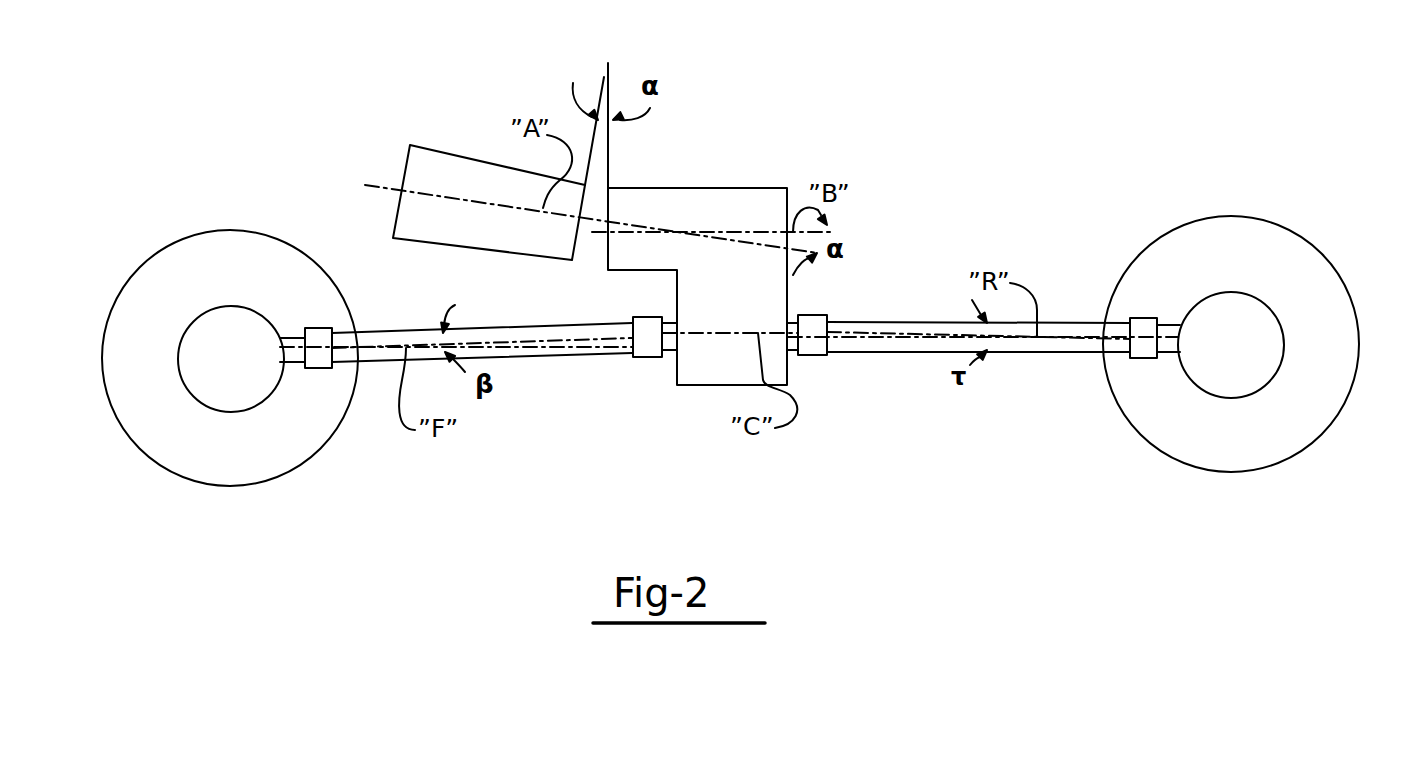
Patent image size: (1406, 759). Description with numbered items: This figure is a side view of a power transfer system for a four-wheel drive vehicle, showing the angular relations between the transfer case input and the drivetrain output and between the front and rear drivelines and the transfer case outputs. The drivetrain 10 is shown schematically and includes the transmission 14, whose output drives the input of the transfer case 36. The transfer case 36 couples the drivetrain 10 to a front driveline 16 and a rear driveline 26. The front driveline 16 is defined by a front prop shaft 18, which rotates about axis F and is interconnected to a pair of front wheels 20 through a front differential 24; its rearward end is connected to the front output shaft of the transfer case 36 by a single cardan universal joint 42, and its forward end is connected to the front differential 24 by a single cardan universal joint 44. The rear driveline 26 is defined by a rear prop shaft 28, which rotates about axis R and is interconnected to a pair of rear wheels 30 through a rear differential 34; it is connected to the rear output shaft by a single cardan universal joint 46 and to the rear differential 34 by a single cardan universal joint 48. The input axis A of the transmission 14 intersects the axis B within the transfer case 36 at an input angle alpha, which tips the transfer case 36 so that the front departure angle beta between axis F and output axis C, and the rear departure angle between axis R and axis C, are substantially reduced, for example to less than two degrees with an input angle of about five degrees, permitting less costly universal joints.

The drivetrain 10 is at (920, 114).
The transmission 14 is at (430, 167).
The front driveline 16 is at (525, 428).
The front prop shaft 18 is at (562, 353).
The front wheels 20 is at (202, 452).
The front differential 24 is at (232, 347).
The rear driveline 26 is at (1012, 210).
The rear prop shaft 28 is at (1022, 352).
The rear wheels 30 is at (1287, 263).
The rear differential 34 is at (1250, 327).
The transfer case 36 is at (742, 205).
The single cardan universal joint 42 is at (643, 357).
The single cardan universal joint 44 is at (320, 360).
The single cardan universal joint 46 is at (819, 320).
The single cardan universal joint 48 is at (1143, 358).